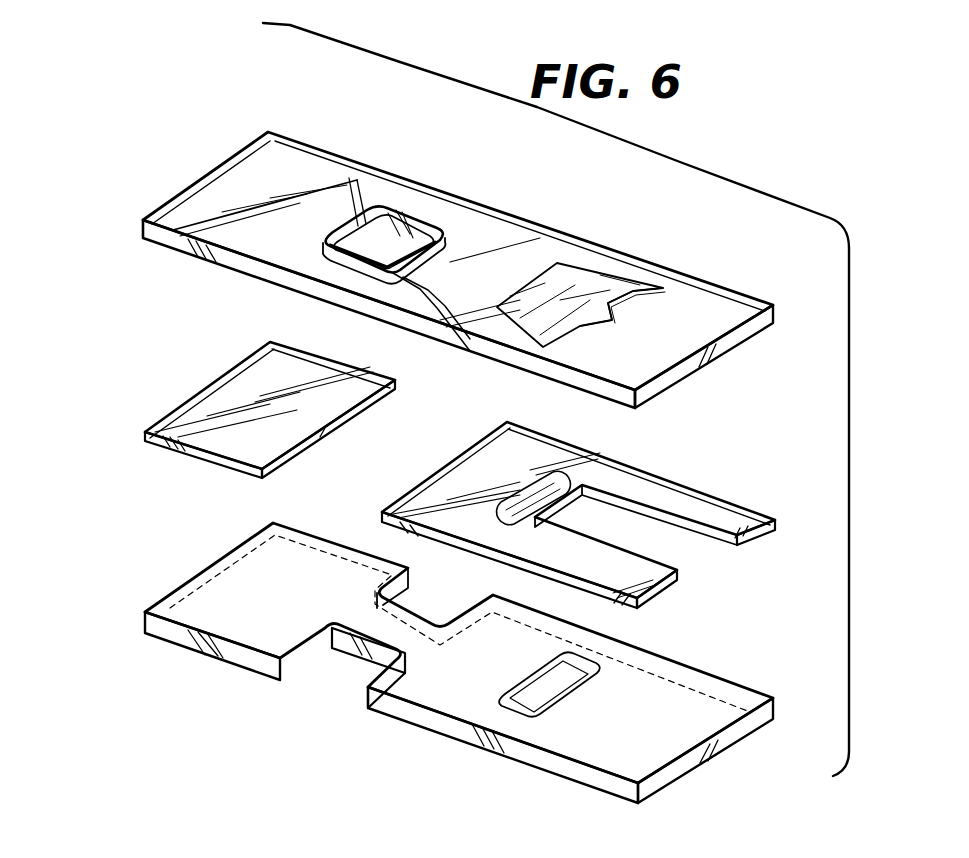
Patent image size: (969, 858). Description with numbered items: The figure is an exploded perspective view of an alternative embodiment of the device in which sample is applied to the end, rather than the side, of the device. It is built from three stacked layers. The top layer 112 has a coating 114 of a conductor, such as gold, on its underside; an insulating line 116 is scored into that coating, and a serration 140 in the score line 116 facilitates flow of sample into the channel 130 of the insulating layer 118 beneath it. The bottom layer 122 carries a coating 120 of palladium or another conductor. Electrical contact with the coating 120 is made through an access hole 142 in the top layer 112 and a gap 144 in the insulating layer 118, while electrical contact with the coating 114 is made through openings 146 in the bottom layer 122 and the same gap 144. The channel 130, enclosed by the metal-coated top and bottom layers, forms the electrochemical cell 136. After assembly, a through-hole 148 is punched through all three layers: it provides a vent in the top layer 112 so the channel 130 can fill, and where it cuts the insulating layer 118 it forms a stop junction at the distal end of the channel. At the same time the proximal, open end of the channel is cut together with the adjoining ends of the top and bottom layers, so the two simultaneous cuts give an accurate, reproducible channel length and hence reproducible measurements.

The top layer 112 is at (255, 175).
The coating 114 is at (221, 270).
The insulating line 116 is at (632, 286).
The insulating layer 118 is at (160, 368).
The coating 120 is at (245, 582).
The bottom layer 122 is at (141, 622).
The channel 130 is at (694, 555).
The electrochemical cell 136 is at (642, 538).
The serration 140 is at (632, 302).
The access hole 142 is at (401, 216).
The gap 144 is at (404, 460).
The openings 146 is at (329, 682).
The through-hole 148 is at (555, 263).